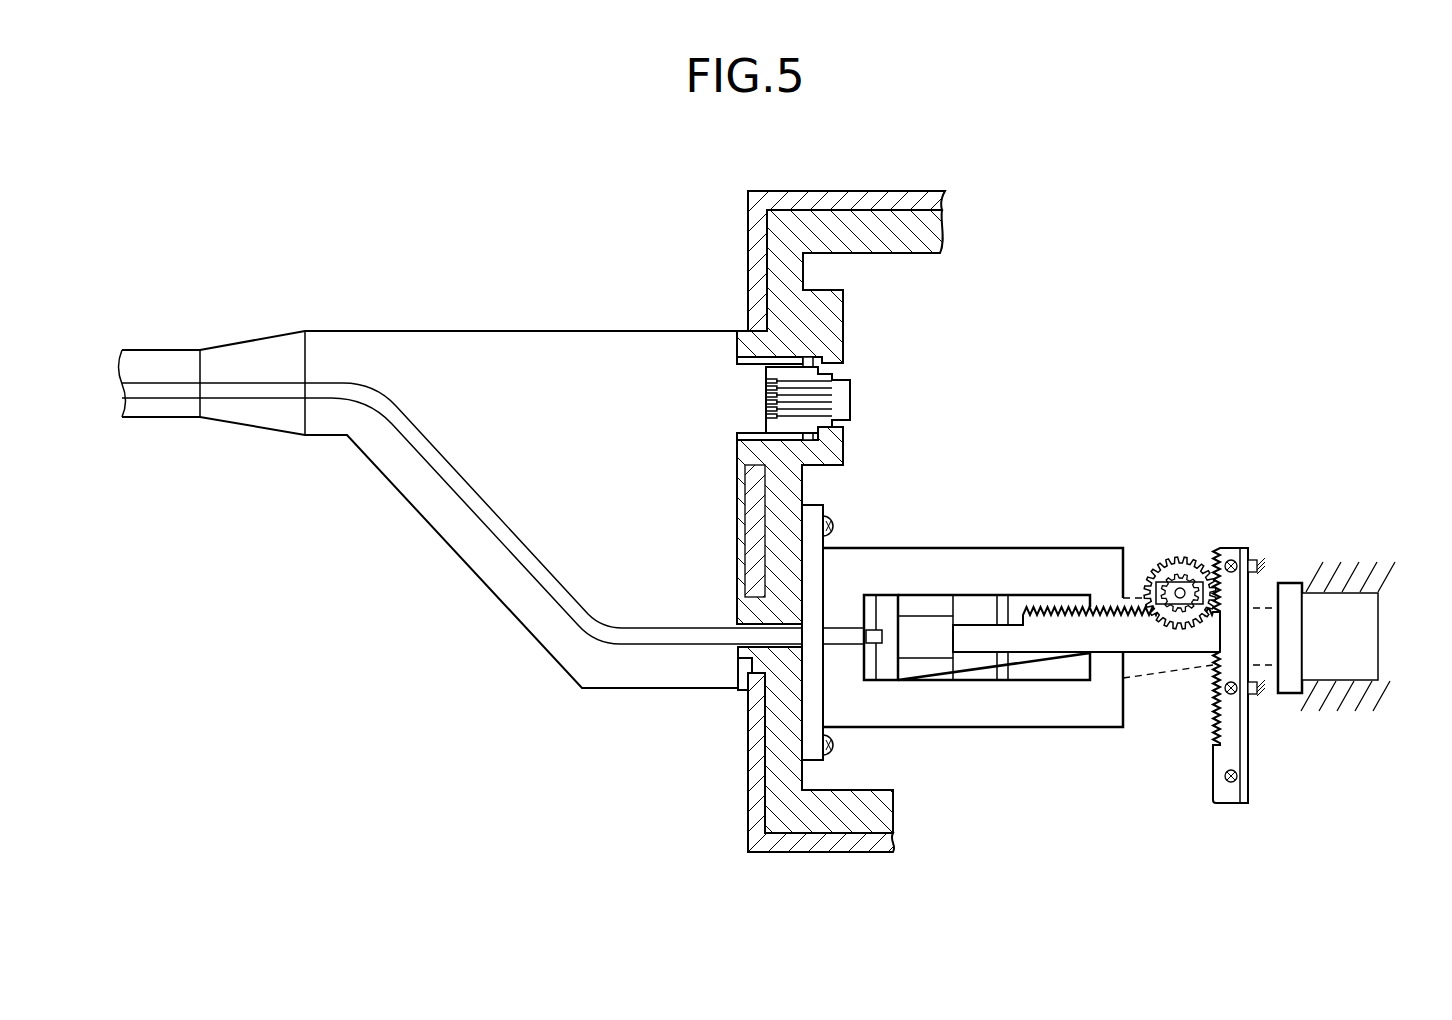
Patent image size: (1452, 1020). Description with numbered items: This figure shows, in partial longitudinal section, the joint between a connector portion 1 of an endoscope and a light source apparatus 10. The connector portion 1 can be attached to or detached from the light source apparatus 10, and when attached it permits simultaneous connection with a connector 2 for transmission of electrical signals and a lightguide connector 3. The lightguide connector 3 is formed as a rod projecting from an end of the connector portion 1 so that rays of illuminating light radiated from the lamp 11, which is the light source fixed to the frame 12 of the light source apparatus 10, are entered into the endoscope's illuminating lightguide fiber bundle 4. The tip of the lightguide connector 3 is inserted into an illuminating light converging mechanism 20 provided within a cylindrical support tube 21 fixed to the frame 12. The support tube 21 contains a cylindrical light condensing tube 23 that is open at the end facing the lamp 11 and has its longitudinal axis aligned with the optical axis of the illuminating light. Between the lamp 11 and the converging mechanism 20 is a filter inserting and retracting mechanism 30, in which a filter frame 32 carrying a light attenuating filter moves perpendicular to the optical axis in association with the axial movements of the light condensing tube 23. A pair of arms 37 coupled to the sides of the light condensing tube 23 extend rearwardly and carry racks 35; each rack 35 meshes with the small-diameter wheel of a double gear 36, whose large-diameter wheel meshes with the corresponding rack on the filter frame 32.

The connector portion 1 is at (560, 329).
The connector 2 is at (788, 352).
The lightguide connector 3 is at (873, 627).
The illuminating lightguide fiber bundle 4 is at (470, 509).
The light source apparatus 10 is at (893, 187).
The lamp 11 is at (1343, 600).
The frame 12 is at (778, 802).
The illuminating light converging mechanism 20 is at (946, 574).
The support tube 21 is at (922, 710).
The light condensing tube 23 is at (977, 668).
The filter inserting and retracting mechanism 30 is at (1197, 549).
The filter frame 32 is at (1256, 748).
The rack 35 is at (1050, 600).
The double gear 36 is at (1155, 568).
The arm 37 is at (1047, 645).